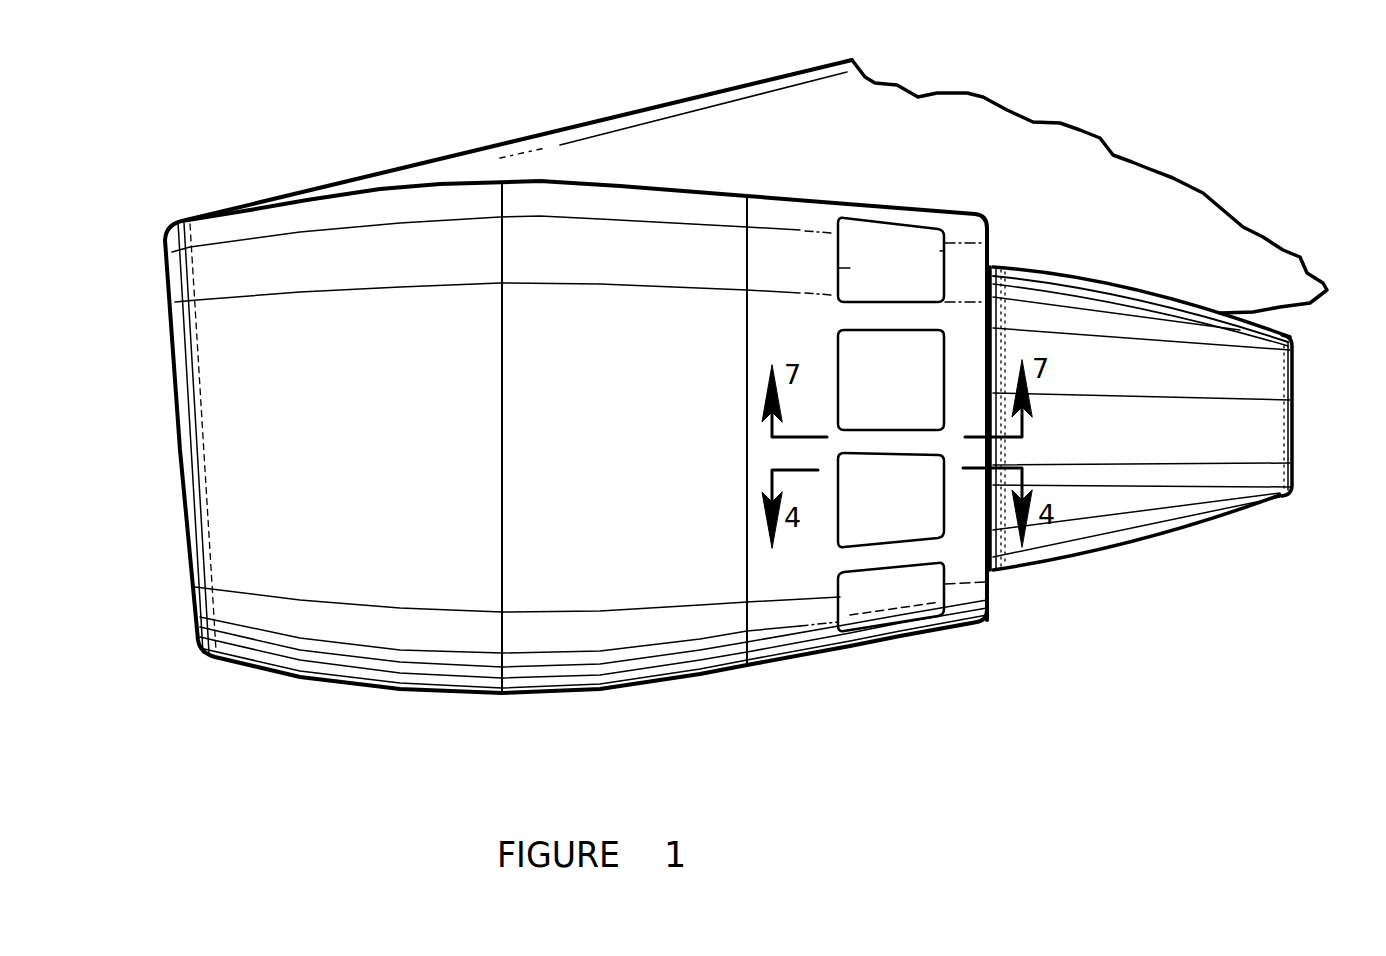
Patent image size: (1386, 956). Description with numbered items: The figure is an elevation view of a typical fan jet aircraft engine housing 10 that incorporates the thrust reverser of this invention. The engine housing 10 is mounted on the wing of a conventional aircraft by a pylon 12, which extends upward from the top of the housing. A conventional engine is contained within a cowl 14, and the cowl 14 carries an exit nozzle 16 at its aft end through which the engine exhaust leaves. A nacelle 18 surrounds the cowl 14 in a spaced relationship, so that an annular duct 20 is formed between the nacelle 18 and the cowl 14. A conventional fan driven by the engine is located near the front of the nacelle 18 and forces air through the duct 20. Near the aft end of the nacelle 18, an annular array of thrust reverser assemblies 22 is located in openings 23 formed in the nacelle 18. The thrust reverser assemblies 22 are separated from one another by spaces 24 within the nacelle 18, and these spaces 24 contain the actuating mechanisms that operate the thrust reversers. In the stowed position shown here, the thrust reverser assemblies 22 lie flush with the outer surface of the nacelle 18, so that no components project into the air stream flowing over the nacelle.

The fan jet aircraft engine housing 10 is at (888, 664).
The pylon 12 is at (660, 103).
The cowl 14 is at (1010, 262).
The exit nozzle 16 is at (1297, 417).
The nacelle 18 is at (408, 695).
The annular duct 20 is at (990, 594).
The thrust reverser assemblies 22 is at (943, 251).
The openings 23 is at (873, 258).
The spaces 24 is at (848, 208).